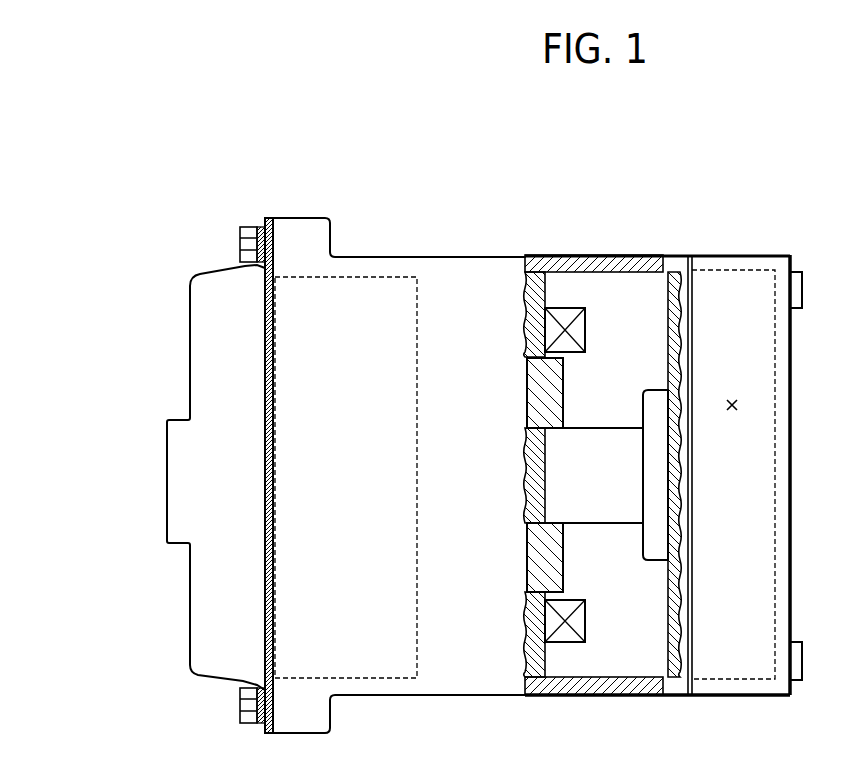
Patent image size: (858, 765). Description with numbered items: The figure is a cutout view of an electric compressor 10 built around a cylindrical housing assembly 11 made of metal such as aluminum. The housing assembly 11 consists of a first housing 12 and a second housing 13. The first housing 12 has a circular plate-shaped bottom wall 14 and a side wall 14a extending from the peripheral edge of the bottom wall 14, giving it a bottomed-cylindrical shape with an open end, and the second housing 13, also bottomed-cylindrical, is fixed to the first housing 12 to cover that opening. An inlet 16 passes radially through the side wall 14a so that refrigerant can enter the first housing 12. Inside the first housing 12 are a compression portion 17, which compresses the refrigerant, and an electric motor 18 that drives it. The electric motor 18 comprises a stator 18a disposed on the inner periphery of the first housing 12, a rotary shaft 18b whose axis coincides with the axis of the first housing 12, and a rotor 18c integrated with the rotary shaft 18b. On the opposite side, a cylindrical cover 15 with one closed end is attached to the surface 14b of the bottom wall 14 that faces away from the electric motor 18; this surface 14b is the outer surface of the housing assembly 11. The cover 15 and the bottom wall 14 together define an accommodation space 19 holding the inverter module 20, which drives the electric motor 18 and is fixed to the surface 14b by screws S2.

The electric compressor 10 is at (61, 138).
The housing assembly 11 is at (312, 167).
The first housing 12 is at (293, 218).
The second housing 13 is at (258, 224).
The bottom wall 14 is at (672, 308).
The side wall 14a is at (618, 692).
The surface 14b is at (686, 270).
The cover 15 is at (749, 255).
The inlet 16 is at (648, 256).
The compression portion 17 is at (418, 471).
The electric motor 18 is at (608, 358).
The stator 18a is at (567, 306).
The rotary shaft 18b is at (592, 524).
The rotor 18c is at (568, 390).
The accommodation space 19 is at (738, 404).
The inverter module 20 is at (776, 473).
The screw S2 is at (805, 297).